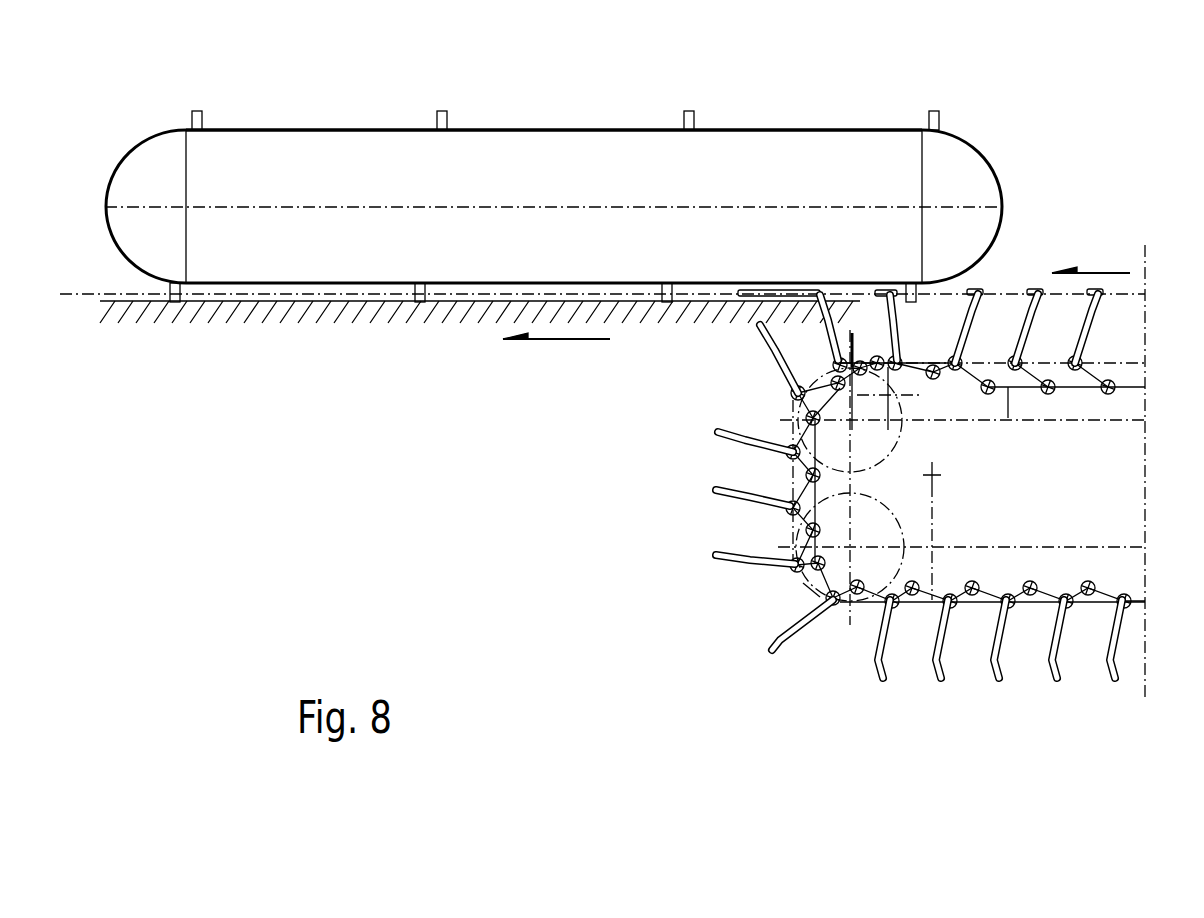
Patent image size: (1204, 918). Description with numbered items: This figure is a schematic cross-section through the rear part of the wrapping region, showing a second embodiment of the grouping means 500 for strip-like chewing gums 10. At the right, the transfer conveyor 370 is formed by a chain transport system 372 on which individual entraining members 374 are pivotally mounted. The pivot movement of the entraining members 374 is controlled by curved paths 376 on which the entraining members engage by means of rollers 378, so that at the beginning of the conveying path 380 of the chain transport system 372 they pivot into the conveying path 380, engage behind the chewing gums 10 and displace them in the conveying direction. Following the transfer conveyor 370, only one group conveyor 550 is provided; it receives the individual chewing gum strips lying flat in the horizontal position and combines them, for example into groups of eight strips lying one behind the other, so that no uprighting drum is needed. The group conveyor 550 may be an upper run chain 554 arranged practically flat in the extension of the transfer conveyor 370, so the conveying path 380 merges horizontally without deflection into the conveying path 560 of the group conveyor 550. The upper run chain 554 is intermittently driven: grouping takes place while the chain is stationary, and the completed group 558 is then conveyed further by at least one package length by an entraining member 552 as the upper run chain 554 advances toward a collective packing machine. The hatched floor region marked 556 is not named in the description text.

The grouping means 500 is at (858, 98).
The group conveyor 550 is at (995, 165).
The entraining member 552 is at (683, 112).
The upper run chain 554 is at (802, 125).
The ground 556 is at (375, 312).
The group 558 is at (747, 318).
The conveying path 560 is at (313, 297).
The chewing gums 10 is at (977, 290).
The conveying path 380 is at (1015, 290).
The transfer conveyor 370 is at (965, 708).
The chain transport system 372 is at (870, 600).
The entraining members 374 is at (885, 597).
The curved paths 376 is at (823, 583).
The rollers 378 is at (1055, 665).